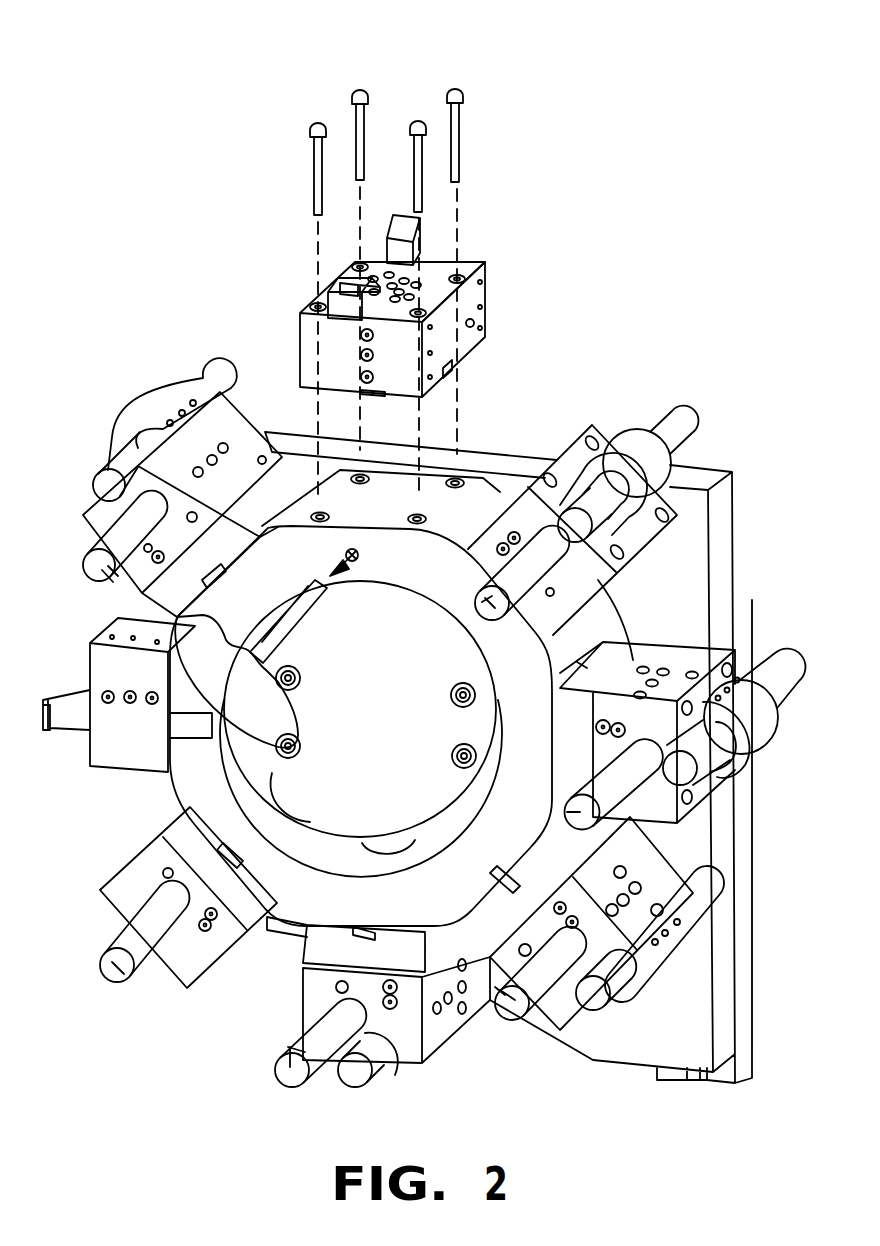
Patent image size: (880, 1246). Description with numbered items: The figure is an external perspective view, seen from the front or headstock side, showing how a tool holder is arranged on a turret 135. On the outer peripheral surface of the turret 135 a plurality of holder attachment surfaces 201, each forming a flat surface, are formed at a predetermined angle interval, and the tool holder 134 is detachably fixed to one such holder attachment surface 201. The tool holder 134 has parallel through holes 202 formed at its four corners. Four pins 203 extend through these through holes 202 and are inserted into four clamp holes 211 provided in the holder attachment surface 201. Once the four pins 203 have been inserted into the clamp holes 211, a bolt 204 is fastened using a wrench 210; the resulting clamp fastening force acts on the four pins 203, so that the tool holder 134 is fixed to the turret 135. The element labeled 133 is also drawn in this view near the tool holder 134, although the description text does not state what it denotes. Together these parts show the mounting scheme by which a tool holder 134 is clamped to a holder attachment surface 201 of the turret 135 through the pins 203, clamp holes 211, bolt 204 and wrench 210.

The tool bit 133 is at (328, 280).
The tool holder 134 is at (483, 300).
The turret 135 is at (617, 602).
The holder attachment surface 201 is at (382, 517).
The through holes 202 is at (402, 294).
The pins 203 is at (455, 92).
The bolt 204 is at (356, 562).
The wrench 210 is at (303, 610).
The clamp holes 211 is at (456, 455).